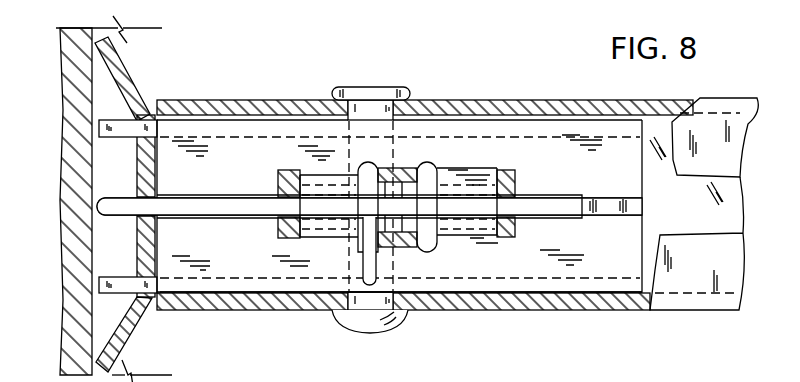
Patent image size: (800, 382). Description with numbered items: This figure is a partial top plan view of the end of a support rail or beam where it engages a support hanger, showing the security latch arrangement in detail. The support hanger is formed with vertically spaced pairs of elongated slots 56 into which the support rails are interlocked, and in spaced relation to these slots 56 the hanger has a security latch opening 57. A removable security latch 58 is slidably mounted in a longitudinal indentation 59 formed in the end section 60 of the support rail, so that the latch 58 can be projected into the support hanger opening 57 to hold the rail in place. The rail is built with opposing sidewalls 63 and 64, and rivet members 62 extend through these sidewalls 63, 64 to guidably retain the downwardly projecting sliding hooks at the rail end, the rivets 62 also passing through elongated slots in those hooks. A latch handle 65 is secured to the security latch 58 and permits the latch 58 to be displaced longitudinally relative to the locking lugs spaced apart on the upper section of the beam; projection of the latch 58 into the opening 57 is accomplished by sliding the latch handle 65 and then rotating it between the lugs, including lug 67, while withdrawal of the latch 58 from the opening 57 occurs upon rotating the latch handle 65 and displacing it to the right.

The slots 56 is at (154, 100).
The support hanger opening 57 is at (136, 199).
The security latch 58 is at (186, 208).
The longitudinal indentation 59 is at (234, 195).
The end section 60 is at (222, 147).
The rivet members 62 is at (350, 322).
The sidewall 63 is at (478, 100).
The sidewall 64 is at (494, 310).
The latch handle 65 is at (366, 273).
The locking lug member 67 is at (402, 168).